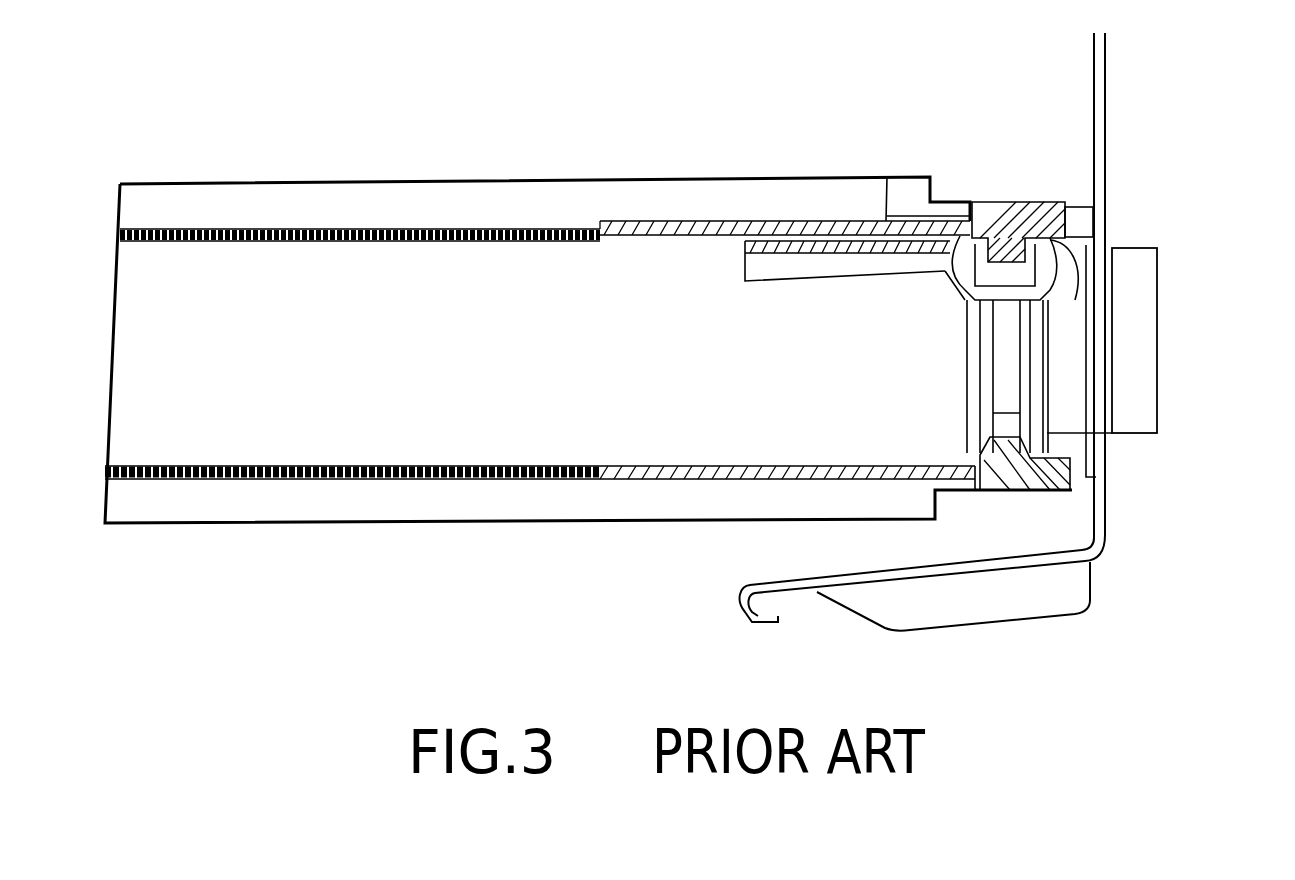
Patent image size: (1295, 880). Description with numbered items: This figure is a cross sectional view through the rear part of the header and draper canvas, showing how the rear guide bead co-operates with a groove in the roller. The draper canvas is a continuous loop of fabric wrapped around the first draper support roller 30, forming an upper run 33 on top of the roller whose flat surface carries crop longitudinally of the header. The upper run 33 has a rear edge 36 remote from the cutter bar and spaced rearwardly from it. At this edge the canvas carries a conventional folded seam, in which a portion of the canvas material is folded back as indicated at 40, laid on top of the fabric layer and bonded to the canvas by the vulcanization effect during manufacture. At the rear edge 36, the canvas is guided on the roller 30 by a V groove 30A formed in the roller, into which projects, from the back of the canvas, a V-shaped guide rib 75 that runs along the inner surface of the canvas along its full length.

The first draper support roller 30 is at (520, 397).
The upper run 33 is at (694, 221).
The folded back portion 40 is at (944, 100).
The rear edge 36 is at (1107, 200).
The V-shaped guide rib 75 is at (952, 258).
The V groove 30A is at (1047, 347).